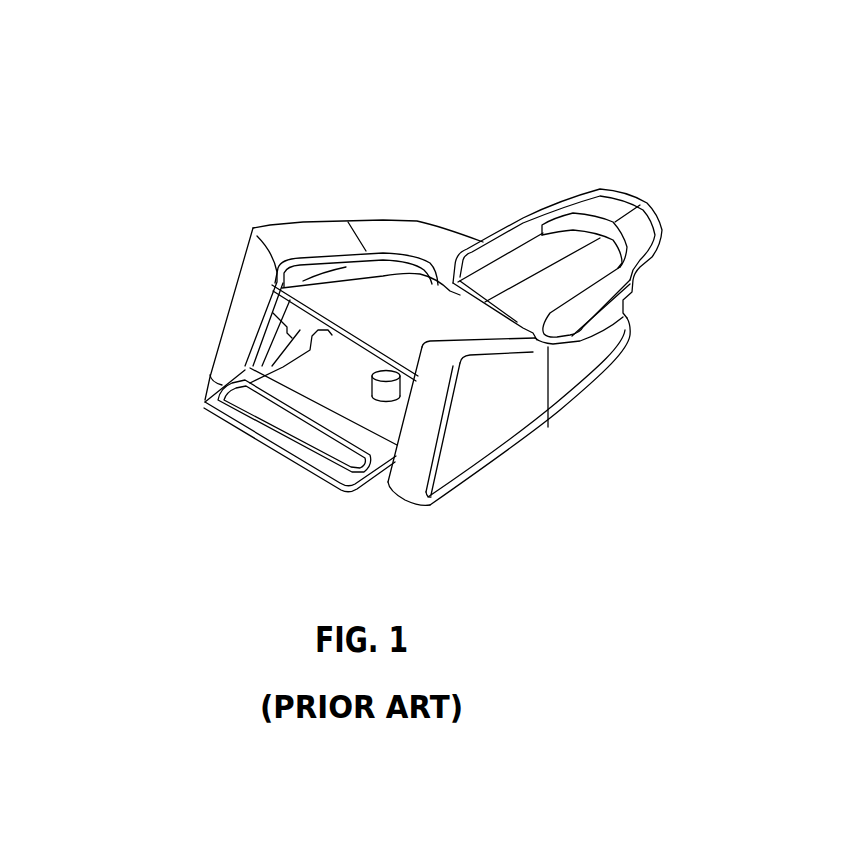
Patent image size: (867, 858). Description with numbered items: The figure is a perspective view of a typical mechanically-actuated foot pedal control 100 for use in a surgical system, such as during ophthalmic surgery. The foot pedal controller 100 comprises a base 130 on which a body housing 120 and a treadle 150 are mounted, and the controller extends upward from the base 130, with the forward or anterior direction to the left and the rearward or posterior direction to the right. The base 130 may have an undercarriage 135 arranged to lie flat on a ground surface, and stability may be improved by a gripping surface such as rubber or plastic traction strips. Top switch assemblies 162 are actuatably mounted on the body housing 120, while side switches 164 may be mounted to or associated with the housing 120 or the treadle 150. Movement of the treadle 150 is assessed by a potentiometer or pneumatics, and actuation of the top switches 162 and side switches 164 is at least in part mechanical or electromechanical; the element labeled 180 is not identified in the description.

The foot pedal control 100 is at (266, 27).
The body housing 120 is at (558, 385).
The base 130 is at (507, 467).
The undercarriage 135 is at (471, 498).
The treadle 150 is at (398, 270).
The top switch assemblies 162 is at (297, 243).
The side switches 164 is at (278, 285).
The support post 180 is at (372, 389).